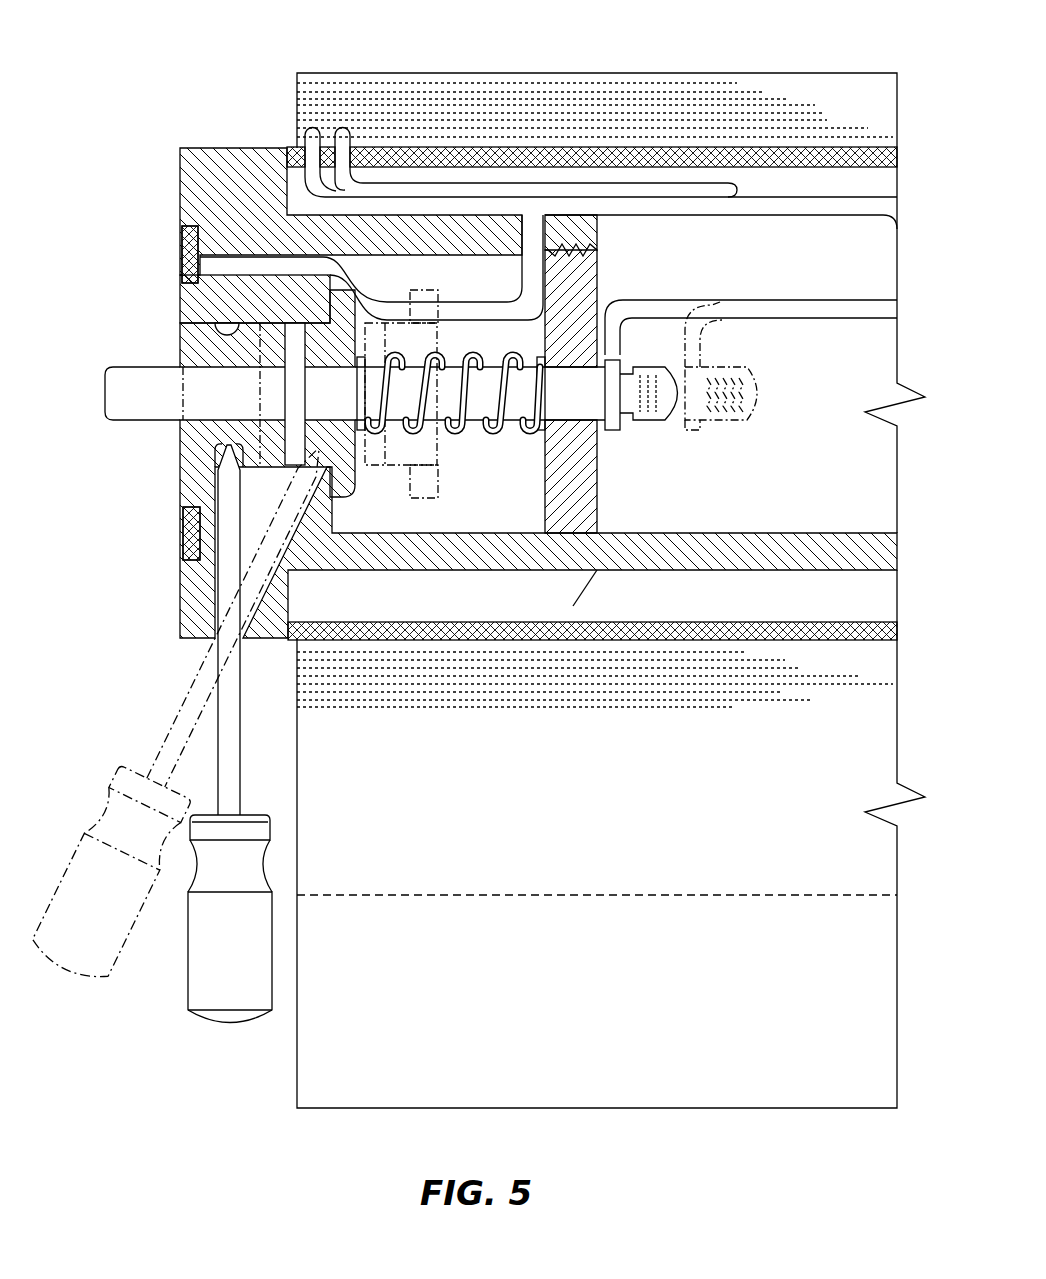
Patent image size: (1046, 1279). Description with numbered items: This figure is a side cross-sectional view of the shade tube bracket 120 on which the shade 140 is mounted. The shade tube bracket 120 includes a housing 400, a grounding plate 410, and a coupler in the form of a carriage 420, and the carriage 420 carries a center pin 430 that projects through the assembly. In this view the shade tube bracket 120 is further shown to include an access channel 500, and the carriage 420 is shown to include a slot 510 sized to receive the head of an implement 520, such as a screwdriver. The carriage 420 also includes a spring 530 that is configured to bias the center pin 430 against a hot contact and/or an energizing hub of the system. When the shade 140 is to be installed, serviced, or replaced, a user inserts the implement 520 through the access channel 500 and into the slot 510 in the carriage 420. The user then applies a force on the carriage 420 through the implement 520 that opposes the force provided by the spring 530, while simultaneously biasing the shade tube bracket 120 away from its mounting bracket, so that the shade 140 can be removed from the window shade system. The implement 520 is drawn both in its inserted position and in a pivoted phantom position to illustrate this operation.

The shade tube bracket 120 is at (245, 66).
The shade 140 is at (858, 967).
The housing 400 is at (178, 146).
The grounding plate 410 is at (176, 250).
The carriage 420 is at (178, 346).
The center pin 430 is at (122, 365).
The access channel 500 is at (254, 492).
The slot 510 is at (214, 444).
The implement 520 is at (218, 1034).
The spring 530 is at (522, 352).